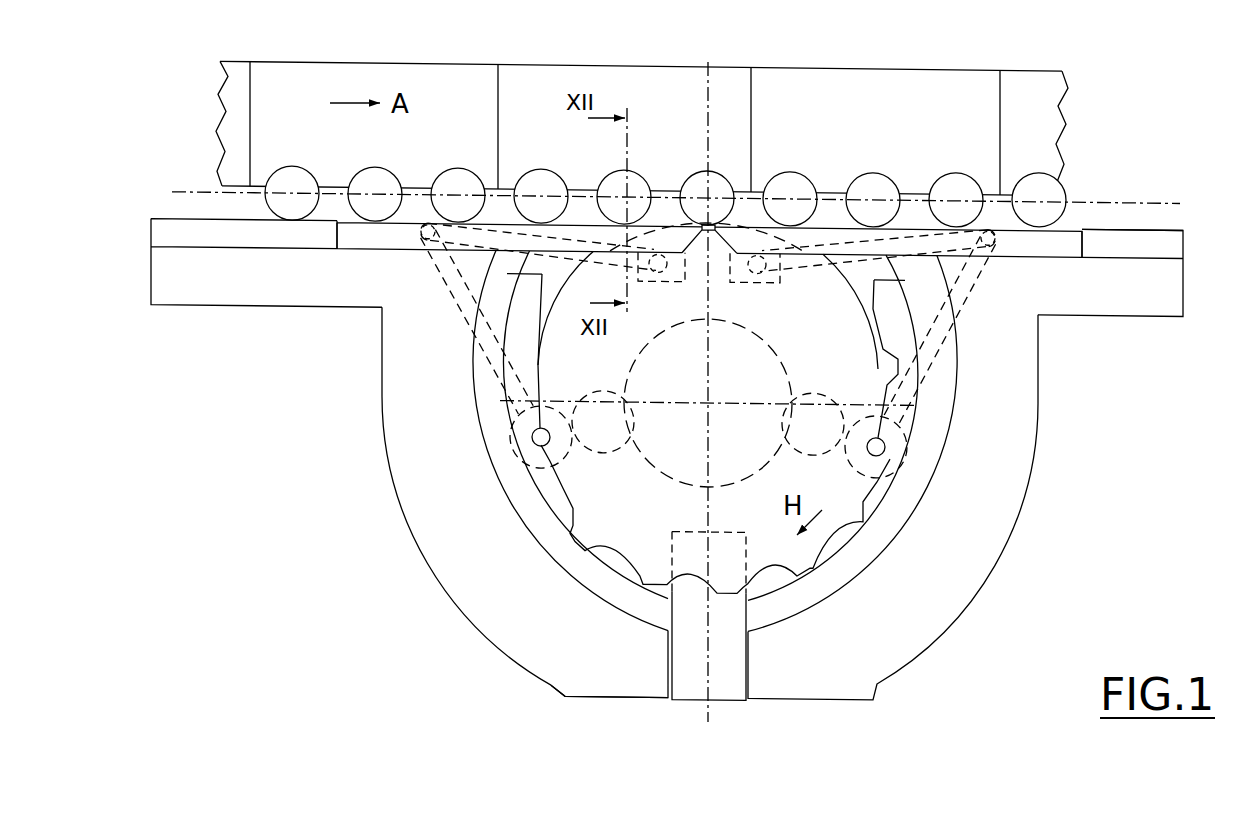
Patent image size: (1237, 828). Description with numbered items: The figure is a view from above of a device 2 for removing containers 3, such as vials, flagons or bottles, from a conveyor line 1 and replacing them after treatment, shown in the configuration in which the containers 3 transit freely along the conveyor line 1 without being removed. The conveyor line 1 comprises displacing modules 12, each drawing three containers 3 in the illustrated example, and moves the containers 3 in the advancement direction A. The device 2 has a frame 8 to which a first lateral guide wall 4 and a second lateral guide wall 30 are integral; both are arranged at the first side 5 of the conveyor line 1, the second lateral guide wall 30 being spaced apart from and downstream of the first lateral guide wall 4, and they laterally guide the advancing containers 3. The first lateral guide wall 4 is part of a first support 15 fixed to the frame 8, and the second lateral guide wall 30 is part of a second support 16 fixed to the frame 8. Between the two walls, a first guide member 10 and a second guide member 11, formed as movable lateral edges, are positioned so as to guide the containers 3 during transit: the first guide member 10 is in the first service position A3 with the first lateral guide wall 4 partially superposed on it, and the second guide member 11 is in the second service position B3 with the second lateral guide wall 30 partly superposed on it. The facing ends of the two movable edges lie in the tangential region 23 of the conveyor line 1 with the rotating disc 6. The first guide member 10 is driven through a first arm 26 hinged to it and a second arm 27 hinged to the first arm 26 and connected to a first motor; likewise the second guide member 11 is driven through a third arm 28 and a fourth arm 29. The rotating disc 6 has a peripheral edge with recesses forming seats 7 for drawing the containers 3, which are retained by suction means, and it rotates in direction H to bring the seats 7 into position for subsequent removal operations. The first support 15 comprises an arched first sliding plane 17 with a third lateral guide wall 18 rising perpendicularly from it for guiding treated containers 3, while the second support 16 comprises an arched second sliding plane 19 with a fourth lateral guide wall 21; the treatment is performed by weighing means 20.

The conveyor line 1 is at (1082, 68).
The device 2 is at (637, 482).
The containers 3 is at (1046, 186).
The first lateral guide wall 4 is at (152, 208).
The first side 5 is at (1192, 210).
The rotating disc 6 is at (637, 511).
The seat 7 is at (612, 562).
The frame 8 is at (372, 533).
The first guide member 10 is at (373, 240).
The second guide member 11 is at (1057, 243).
The displacing modules 12 is at (874, 82).
The first support 15 is at (397, 403).
The second support 16 is at (975, 585).
The first sliding plane 17 is at (647, 615).
The third lateral guide wall 18 is at (522, 530).
The second sliding plane 19 is at (868, 560).
The weighing means 20 is at (740, 705).
The fourth lateral guide wall 21 is at (775, 482).
The tangential region 23 is at (734, 214).
The first arm 26 is at (508, 235).
The second arm 27 is at (492, 380).
The third arm 28 is at (937, 238).
The fourth arm 29 is at (945, 340).
The second lateral guide wall 30 is at (1142, 222).
The first service position A3 is at (342, 258).
The second service position B3 is at (1080, 263).